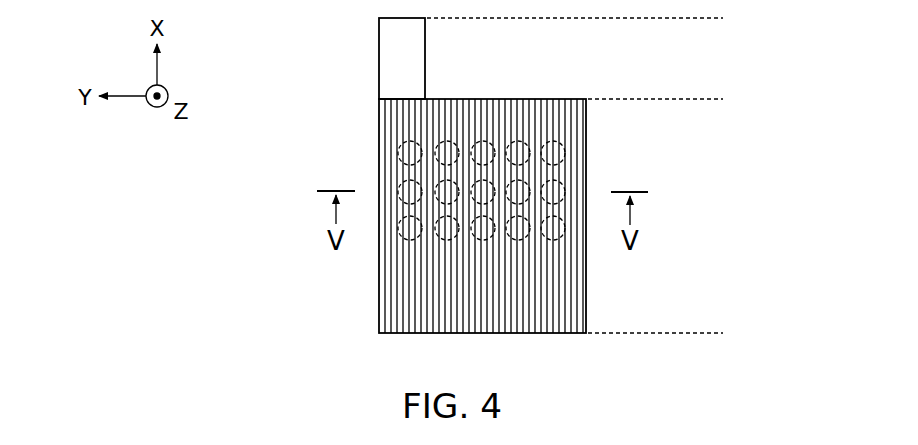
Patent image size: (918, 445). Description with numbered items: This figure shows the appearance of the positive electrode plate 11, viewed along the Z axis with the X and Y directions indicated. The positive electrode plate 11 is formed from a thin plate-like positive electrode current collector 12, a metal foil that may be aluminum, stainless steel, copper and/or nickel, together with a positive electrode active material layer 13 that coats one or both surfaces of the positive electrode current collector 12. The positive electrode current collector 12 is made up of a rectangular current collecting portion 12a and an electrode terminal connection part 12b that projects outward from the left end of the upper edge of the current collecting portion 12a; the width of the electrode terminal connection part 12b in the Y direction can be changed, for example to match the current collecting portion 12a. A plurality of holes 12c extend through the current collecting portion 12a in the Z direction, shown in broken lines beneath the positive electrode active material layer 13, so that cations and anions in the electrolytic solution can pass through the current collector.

The positive electrode plate 11 is at (356, 111).
The positive electrode current collector 12 is at (806, 18).
The current collecting portion 12a is at (738, 101).
The electrode terminal connection part 12b is at (738, 18).
The holes 12c is at (404, 144).
The positive electrode active material layer 13 is at (417, 282).